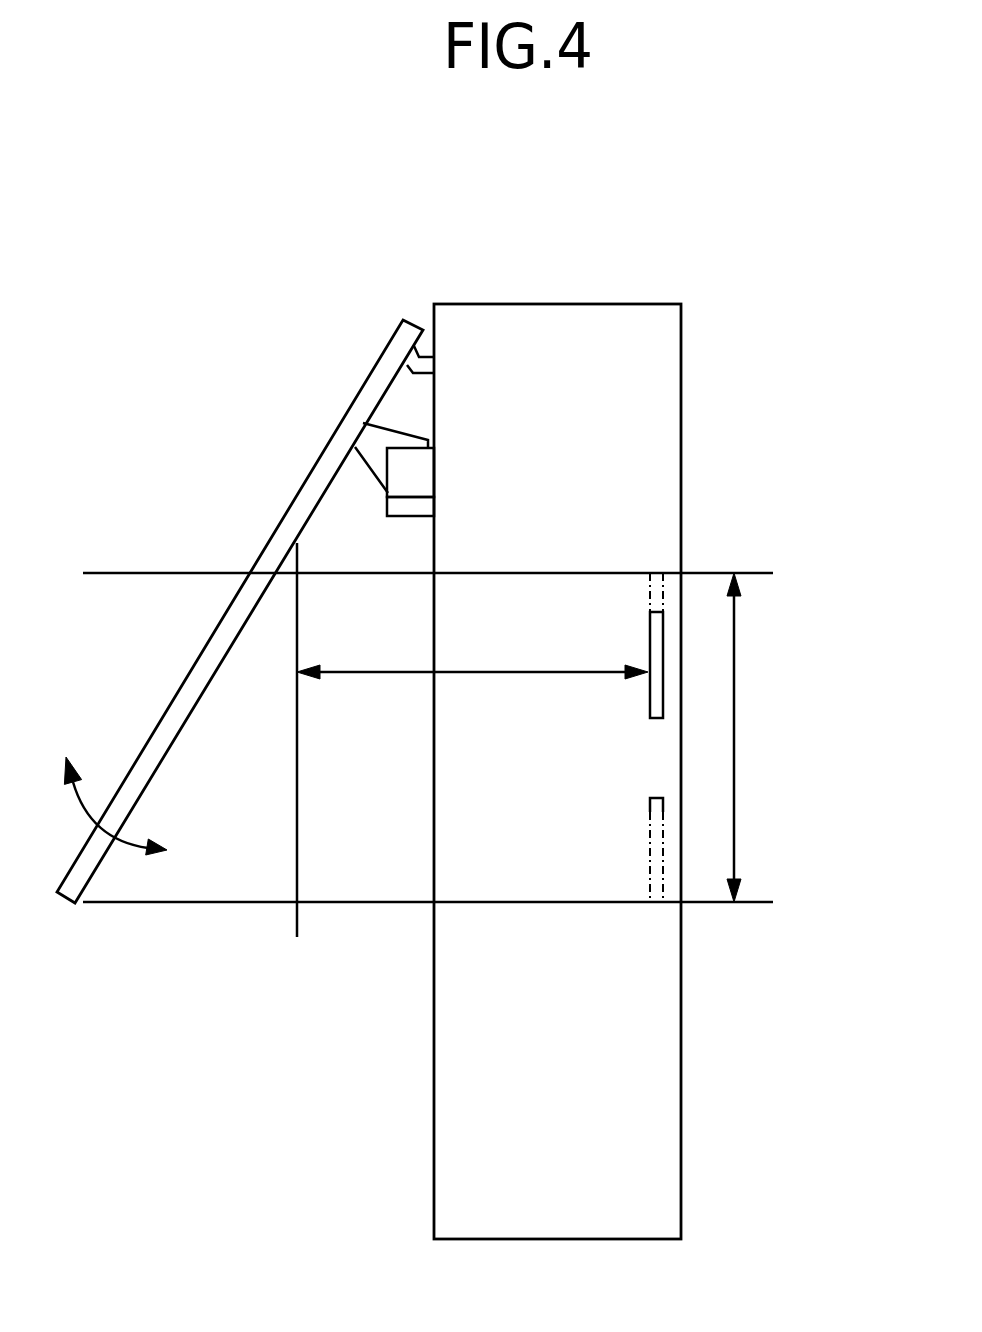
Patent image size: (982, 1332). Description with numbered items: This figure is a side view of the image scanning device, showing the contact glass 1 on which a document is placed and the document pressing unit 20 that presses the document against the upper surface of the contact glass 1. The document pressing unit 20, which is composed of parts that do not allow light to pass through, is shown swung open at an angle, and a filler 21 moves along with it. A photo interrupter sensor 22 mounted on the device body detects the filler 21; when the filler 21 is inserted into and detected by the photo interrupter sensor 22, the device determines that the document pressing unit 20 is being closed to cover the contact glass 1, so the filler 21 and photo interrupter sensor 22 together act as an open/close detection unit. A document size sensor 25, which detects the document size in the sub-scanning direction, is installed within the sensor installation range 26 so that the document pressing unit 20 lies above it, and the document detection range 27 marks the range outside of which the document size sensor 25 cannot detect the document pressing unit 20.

The contact glass 1 is at (672, 1118).
The document pressing unit 20 is at (300, 513).
The filler 21 is at (368, 445).
The photo interrupter sensor 22 is at (423, 475).
The document size sensor 25 is at (655, 645).
The sensor installation range 26 is at (734, 735).
The document detection range 27 is at (540, 672).